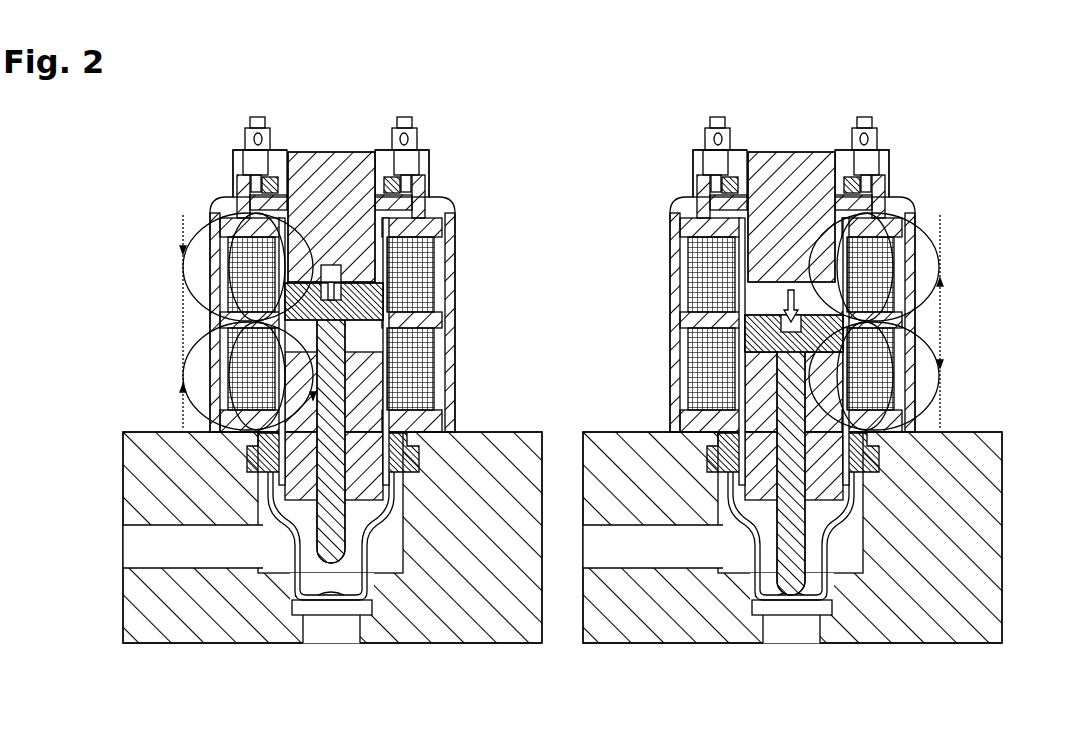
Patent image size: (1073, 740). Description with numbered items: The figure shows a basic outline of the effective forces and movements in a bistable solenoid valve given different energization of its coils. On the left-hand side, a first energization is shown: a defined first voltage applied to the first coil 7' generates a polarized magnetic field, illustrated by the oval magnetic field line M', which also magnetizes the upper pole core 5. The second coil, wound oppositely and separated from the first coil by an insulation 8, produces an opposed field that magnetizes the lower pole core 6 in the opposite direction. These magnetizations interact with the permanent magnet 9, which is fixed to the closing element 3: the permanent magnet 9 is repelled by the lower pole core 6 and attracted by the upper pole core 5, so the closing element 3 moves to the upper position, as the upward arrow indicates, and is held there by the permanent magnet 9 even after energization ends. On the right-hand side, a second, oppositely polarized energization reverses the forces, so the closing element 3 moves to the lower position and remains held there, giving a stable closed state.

The closing element 3 is at (327, 448).
The upper pole core 5 is at (327, 165).
The lower pole core 6 is at (302, 487).
The first coil 7' is at (561, 274).
The insulation 8 is at (386, 320).
The permanent magnet 9 is at (386, 295).
The first magnetic circuit M' is at (520, 267).